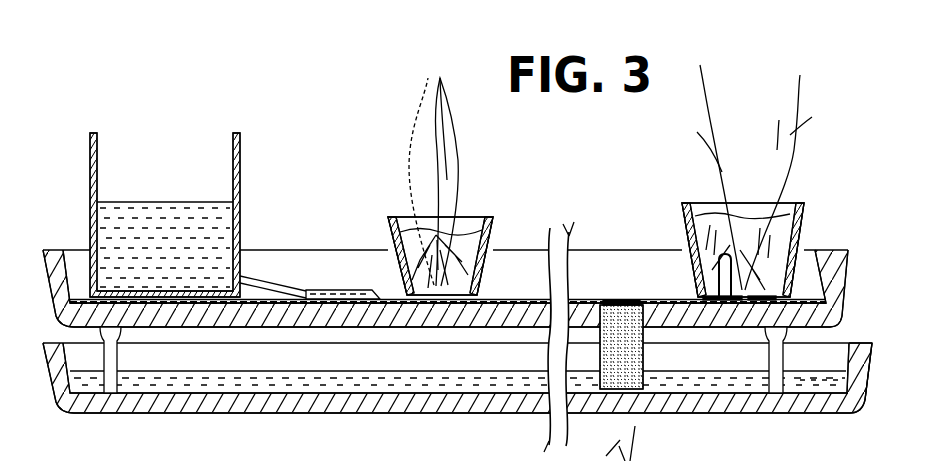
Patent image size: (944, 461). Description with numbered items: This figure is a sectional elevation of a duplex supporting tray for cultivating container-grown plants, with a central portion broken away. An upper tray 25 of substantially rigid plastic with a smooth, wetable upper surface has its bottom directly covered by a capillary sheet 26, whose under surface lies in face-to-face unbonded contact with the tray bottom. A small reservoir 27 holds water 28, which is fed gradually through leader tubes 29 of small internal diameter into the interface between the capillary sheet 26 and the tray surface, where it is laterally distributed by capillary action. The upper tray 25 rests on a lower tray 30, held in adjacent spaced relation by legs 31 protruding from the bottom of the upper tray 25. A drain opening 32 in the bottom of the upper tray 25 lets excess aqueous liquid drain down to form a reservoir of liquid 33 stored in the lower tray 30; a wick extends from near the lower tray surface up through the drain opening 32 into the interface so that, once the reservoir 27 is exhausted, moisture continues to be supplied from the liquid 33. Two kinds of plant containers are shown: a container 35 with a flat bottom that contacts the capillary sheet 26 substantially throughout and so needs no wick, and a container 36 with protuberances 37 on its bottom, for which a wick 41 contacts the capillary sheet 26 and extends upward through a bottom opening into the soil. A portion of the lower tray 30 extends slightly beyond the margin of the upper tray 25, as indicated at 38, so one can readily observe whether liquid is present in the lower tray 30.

The upper tray 25 is at (48, 270).
The capillary sheet 26 is at (390, 293).
The reservoir 27 is at (238, 178).
The water 28 is at (213, 228).
The leader tubes 29 is at (270, 288).
The lower tray 30 is at (307, 395).
The legs 31 is at (120, 360).
The drain opening 32 is at (620, 300).
The reservoir of liquid 33 is at (487, 382).
The container 35 is at (490, 233).
The container 36 is at (688, 226).
The protuberances 37 is at (817, 388).
The extending portion of lower tray 38 is at (862, 341).
The wick 41 is at (717, 275).